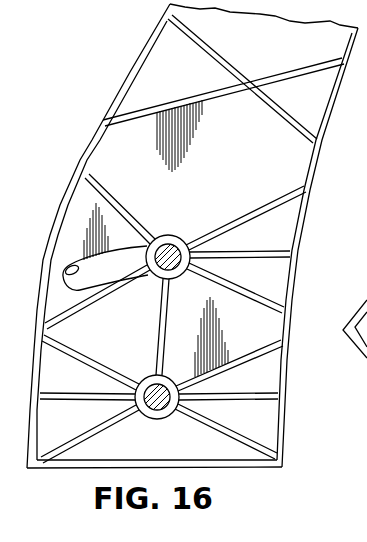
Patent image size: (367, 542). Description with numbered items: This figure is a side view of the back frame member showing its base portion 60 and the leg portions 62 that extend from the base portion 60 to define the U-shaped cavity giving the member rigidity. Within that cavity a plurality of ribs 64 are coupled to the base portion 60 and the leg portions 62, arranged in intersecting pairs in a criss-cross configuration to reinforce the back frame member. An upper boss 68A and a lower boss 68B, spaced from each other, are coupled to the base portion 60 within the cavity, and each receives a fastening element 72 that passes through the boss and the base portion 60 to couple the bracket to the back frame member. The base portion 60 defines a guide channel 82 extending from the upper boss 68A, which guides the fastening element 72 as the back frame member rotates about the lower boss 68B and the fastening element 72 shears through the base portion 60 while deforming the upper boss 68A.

The base portion 60 is at (247, 172).
The leg portions 62 is at (88, 145).
The ribs 64 is at (291, 64).
The upper boss 68A is at (163, 234).
The lower boss 68B is at (153, 418).
The fastening element 72 is at (173, 245).
The guide channel 82 is at (70, 276).